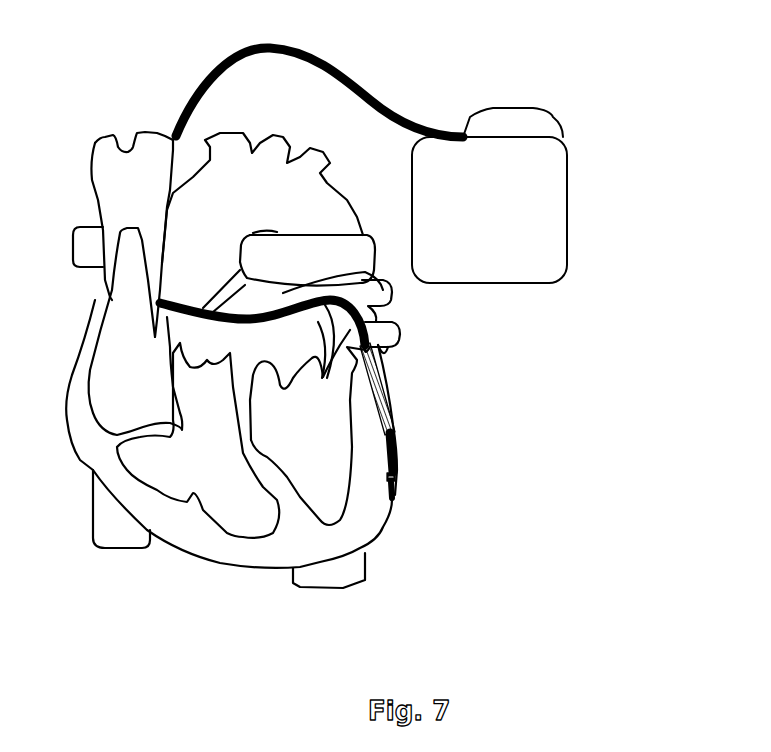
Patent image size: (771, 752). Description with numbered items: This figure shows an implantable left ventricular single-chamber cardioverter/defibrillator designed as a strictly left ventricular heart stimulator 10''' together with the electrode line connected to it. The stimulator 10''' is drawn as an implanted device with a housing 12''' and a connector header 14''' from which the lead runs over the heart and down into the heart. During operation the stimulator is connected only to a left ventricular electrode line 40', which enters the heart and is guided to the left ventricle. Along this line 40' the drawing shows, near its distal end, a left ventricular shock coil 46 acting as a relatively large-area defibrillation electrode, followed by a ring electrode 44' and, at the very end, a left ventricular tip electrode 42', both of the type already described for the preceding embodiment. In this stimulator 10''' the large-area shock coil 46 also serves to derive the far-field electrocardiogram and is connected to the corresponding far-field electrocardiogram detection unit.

The left ventricular heart stimulator 10''' is at (452, 222).
The implantable device housing 12''' is at (541, 280).
The lead 14''' is at (378, 78).
The left ventricular electrode line 40' is at (332, 322).
The left ventricular shock coil 46 is at (393, 423).
The ring electrode 44' is at (455, 484).
The left ventricular tip electrode 42' is at (433, 541).